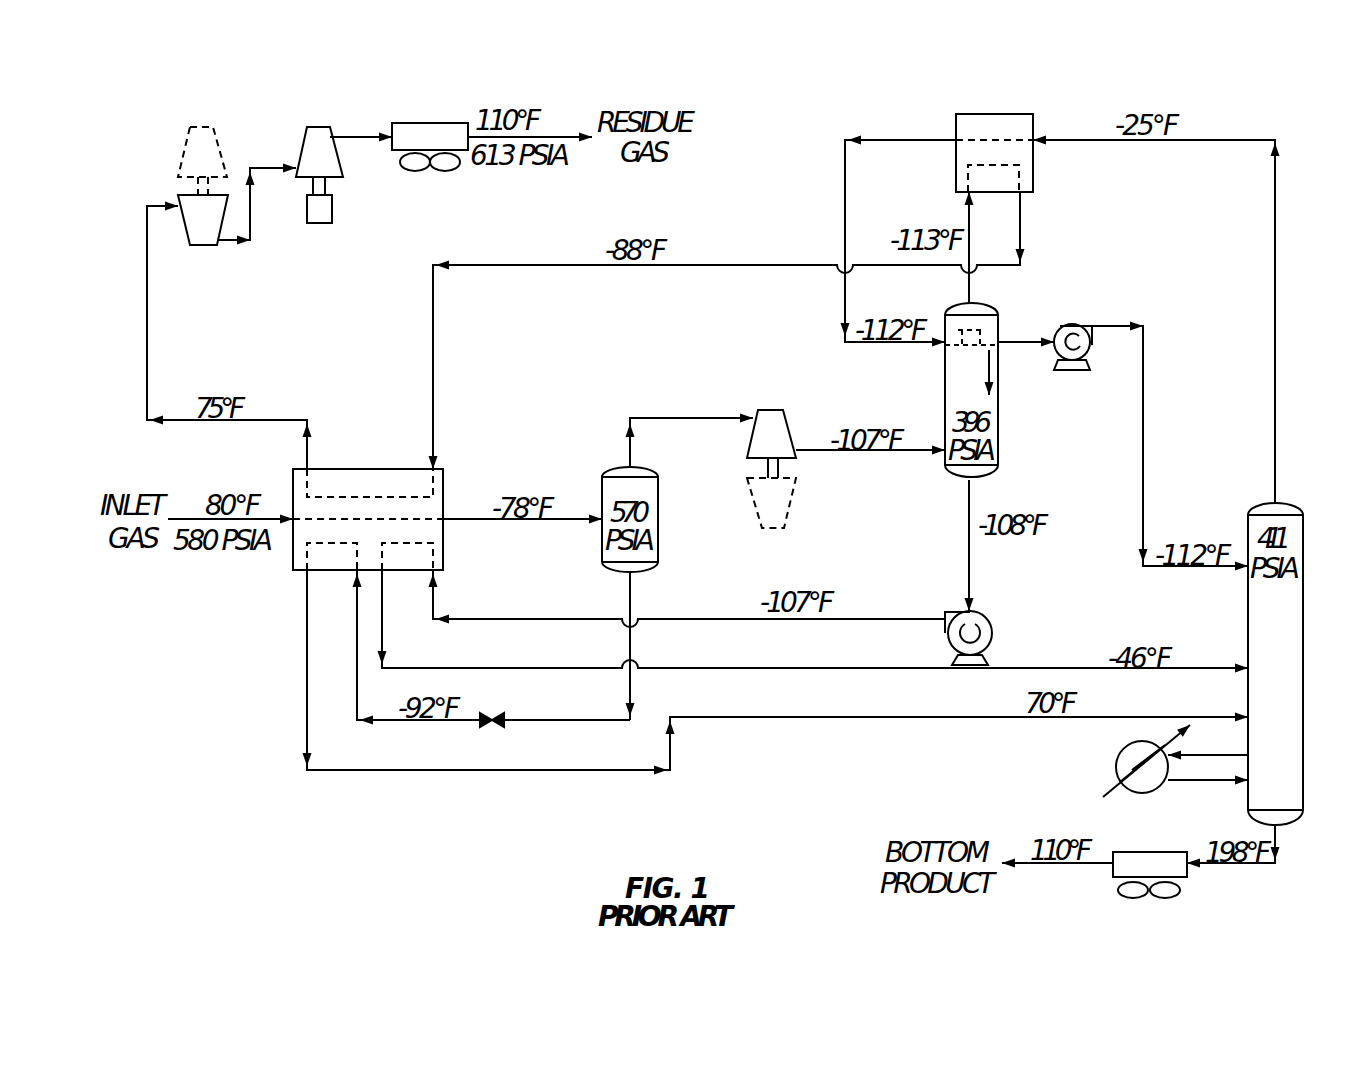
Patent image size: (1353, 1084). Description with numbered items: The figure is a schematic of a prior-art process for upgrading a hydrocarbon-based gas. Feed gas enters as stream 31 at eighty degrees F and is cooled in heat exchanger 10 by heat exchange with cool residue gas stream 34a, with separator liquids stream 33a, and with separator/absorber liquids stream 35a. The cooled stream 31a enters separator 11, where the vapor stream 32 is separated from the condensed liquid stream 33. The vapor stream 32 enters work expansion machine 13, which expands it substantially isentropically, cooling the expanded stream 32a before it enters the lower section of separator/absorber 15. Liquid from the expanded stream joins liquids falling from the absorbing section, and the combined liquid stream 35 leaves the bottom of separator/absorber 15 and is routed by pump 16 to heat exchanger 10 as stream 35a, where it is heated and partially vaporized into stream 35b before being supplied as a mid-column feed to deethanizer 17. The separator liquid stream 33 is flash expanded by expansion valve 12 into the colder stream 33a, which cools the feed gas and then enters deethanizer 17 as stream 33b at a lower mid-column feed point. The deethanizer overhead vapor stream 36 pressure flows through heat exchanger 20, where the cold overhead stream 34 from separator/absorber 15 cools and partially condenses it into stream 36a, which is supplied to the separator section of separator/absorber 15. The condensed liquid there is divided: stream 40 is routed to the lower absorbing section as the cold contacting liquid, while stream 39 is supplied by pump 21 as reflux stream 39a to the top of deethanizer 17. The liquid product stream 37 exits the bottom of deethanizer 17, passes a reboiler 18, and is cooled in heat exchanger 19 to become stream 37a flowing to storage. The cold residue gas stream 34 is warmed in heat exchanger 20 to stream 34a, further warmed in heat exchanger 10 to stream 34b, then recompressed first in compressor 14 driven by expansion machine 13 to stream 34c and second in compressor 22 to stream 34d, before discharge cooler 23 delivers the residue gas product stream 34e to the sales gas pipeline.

The heat exchanger 10 is at (392, 469).
The separator 11 is at (658, 522).
The expansion valve 12 is at (503, 708).
The work expansion machine 13 is at (199, 127).
The compressor 14 is at (205, 248).
The separator/absorber 15 is at (998, 437).
The pump 16 is at (993, 630).
The deethanizer 17 is at (1248, 637).
The reboiler 18 is at (1155, 790).
The heat exchanger 19 is at (1133, 852).
The heat exchanger 20 is at (956, 170).
The pump 21 is at (1075, 372).
The compressor 22 is at (318, 127).
The discharge cooler 23 is at (430, 123).
The feed gas stream 31 is at (193, 519).
The cooled feed stream 31a is at (512, 521).
The vapor stream 32 is at (675, 420).
The expanded stream 32a is at (855, 452).
The separator liquid stream 33 is at (632, 592).
The expanded separator liquid stream 33a is at (414, 722).
The heated separator liquid stream 33b is at (1035, 719).
The cold residue gas stream 34 is at (971, 224).
The warmed residue gas stream 34a is at (641, 265).
The further warmed residue gas stream 34b is at (215, 422).
The first-stage compressed residue gas stream 34c is at (251, 210).
The second-stage compressed residue gas stream 34d is at (362, 137).
The residue gas product stream 34e is at (552, 137).
The combined liquid stream 35 is at (967, 522).
The pumped combined liquid stream 35a is at (787, 620).
The partially vaporized liquid stream 35b is at (1130, 670).
The deethanizer overhead vapor stream 36 is at (1137, 142).
The cooled deethanizer overhead stream 36a is at (880, 344).
The liquid product stream 37 is at (1228, 865).
The cooled liquid product stream 37a is at (1048, 865).
The reflux liquid stream 39 is at (1020, 342).
The reflux stream 39a is at (1185, 568).
The cold liquid stream 40 is at (989, 368).